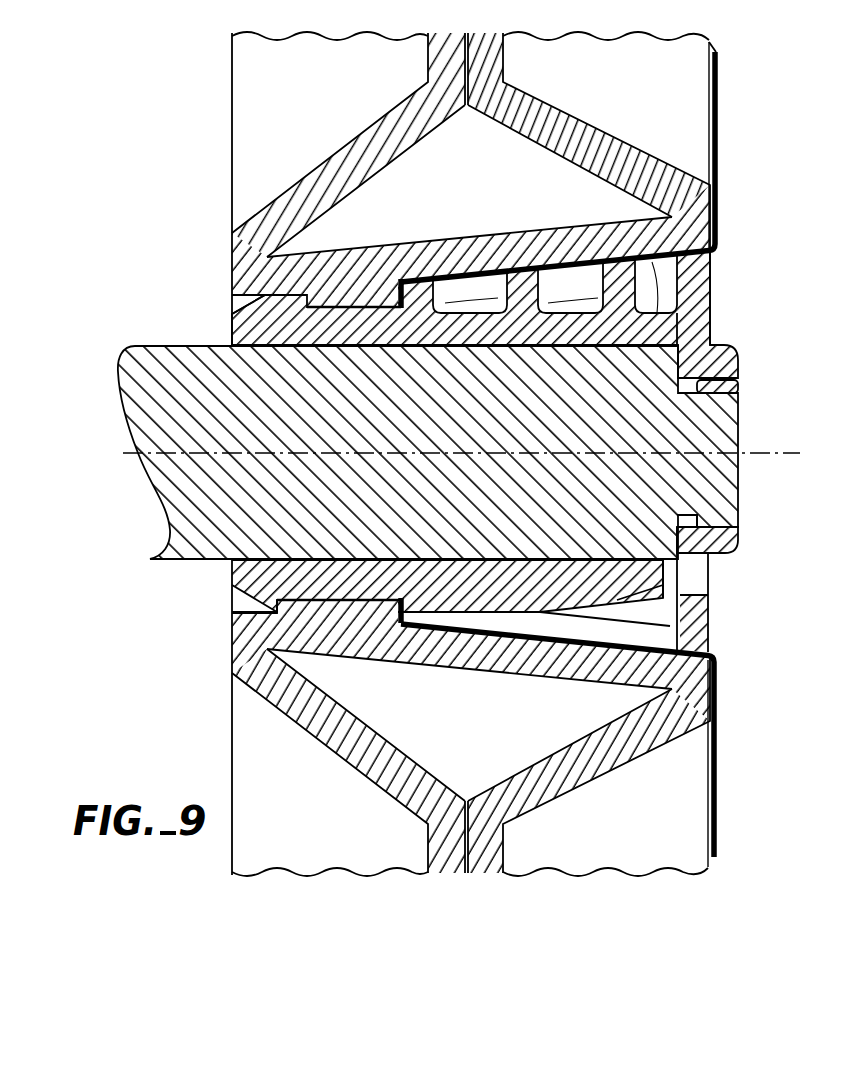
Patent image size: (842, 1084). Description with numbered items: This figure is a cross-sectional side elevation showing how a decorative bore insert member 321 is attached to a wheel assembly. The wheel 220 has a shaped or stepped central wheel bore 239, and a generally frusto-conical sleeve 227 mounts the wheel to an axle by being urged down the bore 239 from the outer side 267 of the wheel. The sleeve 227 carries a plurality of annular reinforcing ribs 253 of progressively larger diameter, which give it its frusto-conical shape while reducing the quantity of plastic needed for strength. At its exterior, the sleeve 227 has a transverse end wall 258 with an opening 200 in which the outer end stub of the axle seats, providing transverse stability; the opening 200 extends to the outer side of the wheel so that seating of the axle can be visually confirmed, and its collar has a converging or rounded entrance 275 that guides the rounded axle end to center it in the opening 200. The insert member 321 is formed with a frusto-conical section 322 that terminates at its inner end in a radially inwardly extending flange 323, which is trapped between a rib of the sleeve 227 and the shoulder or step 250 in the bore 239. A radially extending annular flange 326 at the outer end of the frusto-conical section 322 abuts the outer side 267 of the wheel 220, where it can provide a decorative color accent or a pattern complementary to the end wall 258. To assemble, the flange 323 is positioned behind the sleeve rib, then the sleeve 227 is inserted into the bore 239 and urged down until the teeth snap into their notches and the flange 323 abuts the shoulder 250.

The opening 200 is at (722, 522).
The wheel 220 is at (226, 97).
The sleeve 227 is at (752, 540).
The wheel bore 239 is at (690, 317).
The shoulder 250 is at (397, 323).
The annular reinforcing ribs 253 is at (397, 323).
The end wall 258 is at (713, 297).
The outer side 267 is at (716, 50).
The converging collar entrance 275 is at (680, 395).
The bore insert member 321 is at (760, 785).
The frusto-conical section 322 is at (560, 228).
The radially inwardly extending flange 323 is at (397, 306).
The annular flange 326 is at (718, 120).